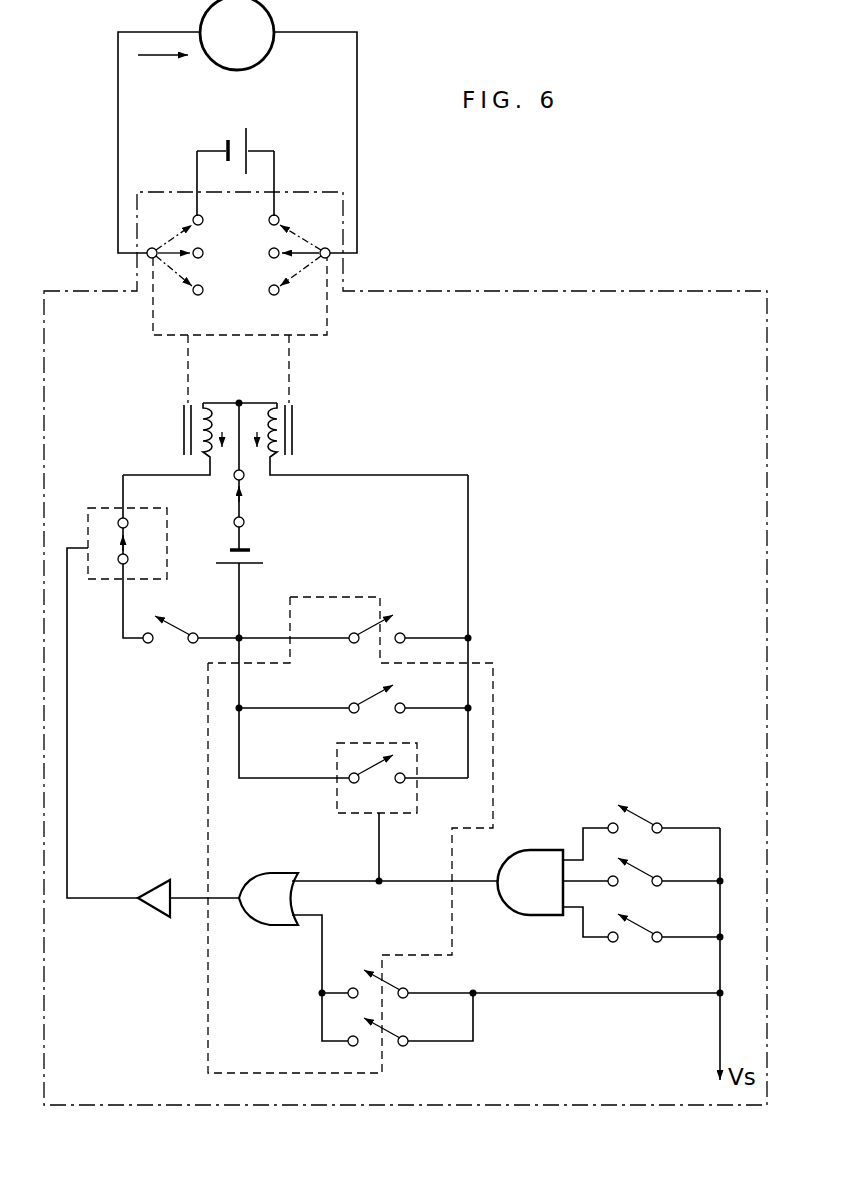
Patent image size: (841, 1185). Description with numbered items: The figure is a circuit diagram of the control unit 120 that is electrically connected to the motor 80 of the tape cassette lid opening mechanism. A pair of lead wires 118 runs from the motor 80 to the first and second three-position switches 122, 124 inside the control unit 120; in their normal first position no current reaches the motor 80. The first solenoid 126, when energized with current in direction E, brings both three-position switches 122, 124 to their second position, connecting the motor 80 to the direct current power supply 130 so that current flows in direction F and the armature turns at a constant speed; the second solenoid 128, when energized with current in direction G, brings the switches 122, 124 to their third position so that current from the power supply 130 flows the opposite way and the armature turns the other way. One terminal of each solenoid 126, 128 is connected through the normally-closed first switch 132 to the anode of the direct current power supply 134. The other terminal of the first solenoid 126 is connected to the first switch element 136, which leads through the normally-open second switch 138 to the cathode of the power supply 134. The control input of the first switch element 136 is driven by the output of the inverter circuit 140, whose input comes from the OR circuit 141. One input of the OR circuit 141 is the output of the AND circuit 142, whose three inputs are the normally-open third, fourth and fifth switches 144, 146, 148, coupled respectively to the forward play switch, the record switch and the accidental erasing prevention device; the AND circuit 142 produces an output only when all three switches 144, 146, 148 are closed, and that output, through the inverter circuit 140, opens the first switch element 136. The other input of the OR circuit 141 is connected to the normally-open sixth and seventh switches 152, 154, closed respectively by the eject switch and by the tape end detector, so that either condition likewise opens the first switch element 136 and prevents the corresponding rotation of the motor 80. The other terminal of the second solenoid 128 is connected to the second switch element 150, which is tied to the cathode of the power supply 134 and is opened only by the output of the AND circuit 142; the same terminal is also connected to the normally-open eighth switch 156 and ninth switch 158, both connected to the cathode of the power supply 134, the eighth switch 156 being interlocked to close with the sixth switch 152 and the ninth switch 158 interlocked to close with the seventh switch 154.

The motor 80 is at (268, 44).
The lead wires 118 is at (118, 106).
The control unit 120 is at (539, 307).
The first three-position switch 122 is at (170, 232).
The second three-position switch 124 is at (306, 233).
The first solenoid 126 is at (192, 402).
The second solenoid 128 is at (278, 402).
The direct current power supply 130 is at (248, 139).
The first switch 132 is at (245, 503).
The direct current power supply 134 is at (252, 554).
The first switch element 136 is at (99, 495).
The second switch 138 is at (174, 616).
The inverter circuit 140 is at (162, 878).
The OR circuit 141 is at (268, 874).
The AND circuit 142 is at (528, 852).
The third switch 144 is at (639, 809).
The fourth switch 146 is at (638, 871).
The fifth switch 148 is at (639, 927).
The second switch element 150 is at (418, 765).
The sixth switch 152 is at (365, 958).
The seventh switch 154 is at (389, 1026).
The eighth switch 156 is at (365, 697).
The ninth switch 158 is at (387, 616).